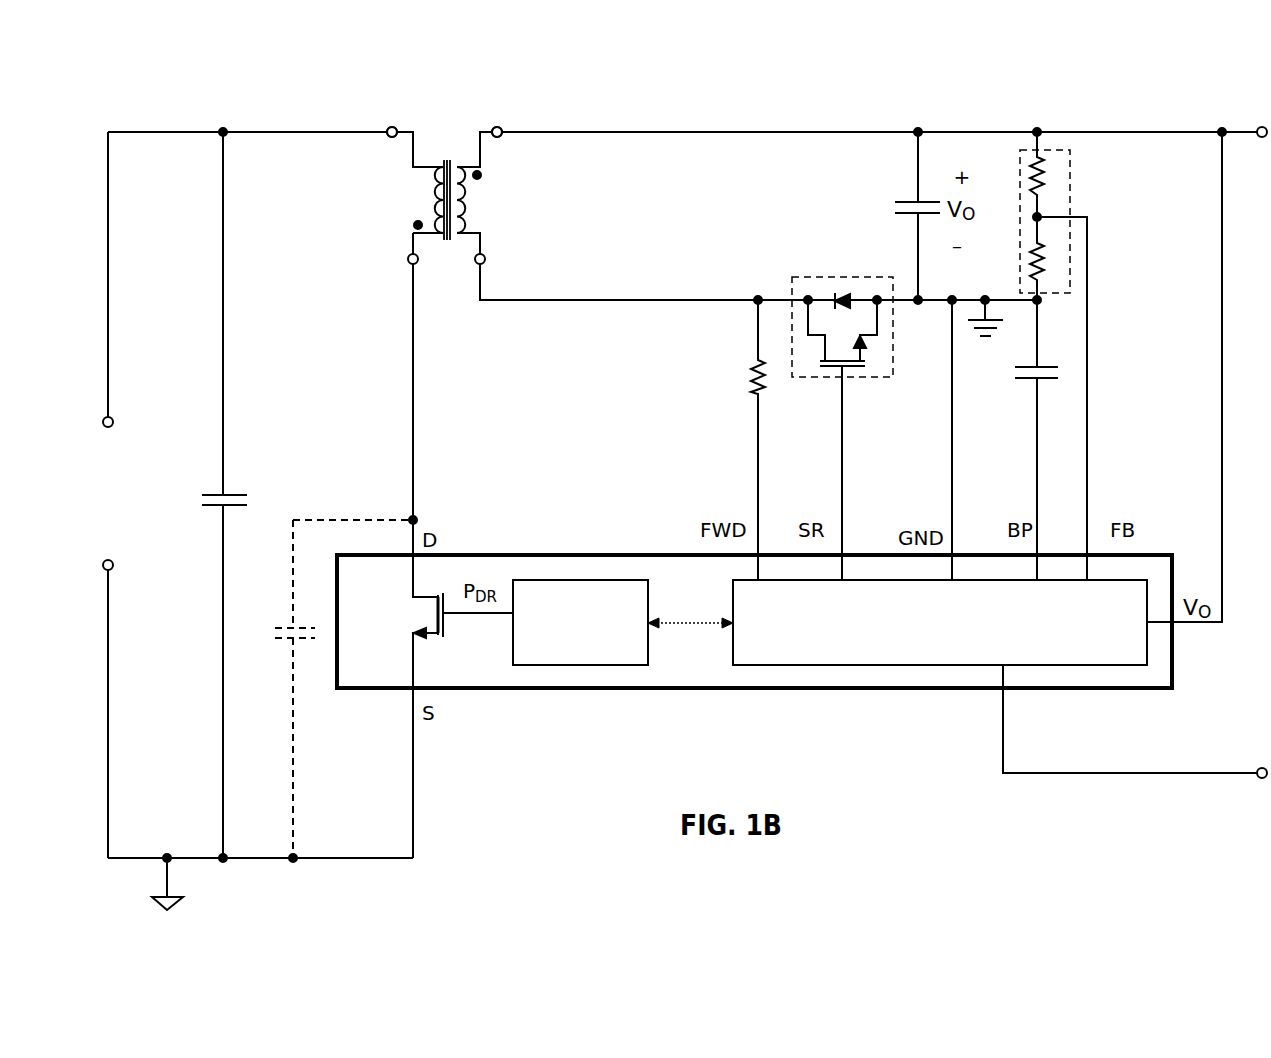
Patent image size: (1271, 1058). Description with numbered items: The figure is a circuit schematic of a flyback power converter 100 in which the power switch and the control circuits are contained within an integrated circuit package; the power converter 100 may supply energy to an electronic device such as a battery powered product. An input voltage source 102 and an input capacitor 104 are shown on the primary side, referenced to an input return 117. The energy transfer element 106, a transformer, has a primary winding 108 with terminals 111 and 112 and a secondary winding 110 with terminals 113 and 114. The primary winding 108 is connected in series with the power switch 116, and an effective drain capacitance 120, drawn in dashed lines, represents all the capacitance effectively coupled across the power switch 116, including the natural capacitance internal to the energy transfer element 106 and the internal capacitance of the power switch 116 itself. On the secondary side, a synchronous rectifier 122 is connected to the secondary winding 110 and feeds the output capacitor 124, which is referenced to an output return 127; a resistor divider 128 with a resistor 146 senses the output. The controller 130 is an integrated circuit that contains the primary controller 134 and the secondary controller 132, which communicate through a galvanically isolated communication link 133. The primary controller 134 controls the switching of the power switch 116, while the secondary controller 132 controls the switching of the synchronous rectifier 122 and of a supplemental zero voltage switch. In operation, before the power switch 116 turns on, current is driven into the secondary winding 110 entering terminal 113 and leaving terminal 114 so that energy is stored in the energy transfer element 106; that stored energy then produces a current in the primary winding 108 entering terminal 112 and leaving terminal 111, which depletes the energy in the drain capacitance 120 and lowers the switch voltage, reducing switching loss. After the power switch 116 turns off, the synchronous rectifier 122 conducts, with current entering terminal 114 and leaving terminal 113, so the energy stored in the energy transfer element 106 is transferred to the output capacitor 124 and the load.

The power converter 100 is at (1258, 55).
The input voltage source 102 is at (92, 482).
The input capacitor 104 is at (173, 488).
The energy transfer element 106 is at (441, 174).
The primary winding 108 is at (347, 182).
The secondary winding 110 is at (535, 198).
The terminal 111 is at (385, 125).
The terminal 112 is at (407, 263).
The terminal 113 is at (490, 125).
The terminal 114 is at (492, 265).
The power switch 116 is at (403, 607).
The input return / ground 117 is at (150, 905).
The effective drain capacitance 120 is at (255, 608).
The synchronous rectifier 122 is at (840, 277).
The output capacitor 124 is at (873, 195).
The output return / ground 127 is at (987, 350).
The feedback resistor divider 128 is at (1045, 216).
The controller 130 is at (754, 561).
The secondary controller 132 is at (820, 673).
The galvanically isolated communication link 133 is at (693, 633).
The primary controller 134 is at (577, 678).
The feedback resistor 146 is at (977, 193).